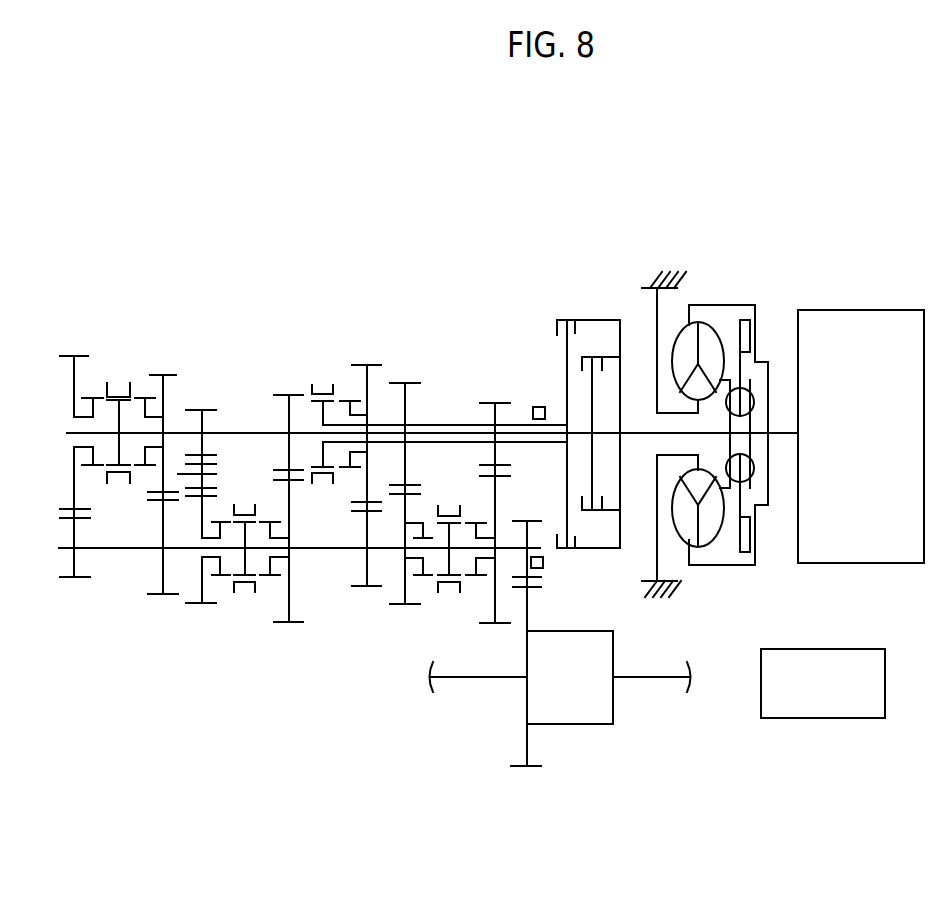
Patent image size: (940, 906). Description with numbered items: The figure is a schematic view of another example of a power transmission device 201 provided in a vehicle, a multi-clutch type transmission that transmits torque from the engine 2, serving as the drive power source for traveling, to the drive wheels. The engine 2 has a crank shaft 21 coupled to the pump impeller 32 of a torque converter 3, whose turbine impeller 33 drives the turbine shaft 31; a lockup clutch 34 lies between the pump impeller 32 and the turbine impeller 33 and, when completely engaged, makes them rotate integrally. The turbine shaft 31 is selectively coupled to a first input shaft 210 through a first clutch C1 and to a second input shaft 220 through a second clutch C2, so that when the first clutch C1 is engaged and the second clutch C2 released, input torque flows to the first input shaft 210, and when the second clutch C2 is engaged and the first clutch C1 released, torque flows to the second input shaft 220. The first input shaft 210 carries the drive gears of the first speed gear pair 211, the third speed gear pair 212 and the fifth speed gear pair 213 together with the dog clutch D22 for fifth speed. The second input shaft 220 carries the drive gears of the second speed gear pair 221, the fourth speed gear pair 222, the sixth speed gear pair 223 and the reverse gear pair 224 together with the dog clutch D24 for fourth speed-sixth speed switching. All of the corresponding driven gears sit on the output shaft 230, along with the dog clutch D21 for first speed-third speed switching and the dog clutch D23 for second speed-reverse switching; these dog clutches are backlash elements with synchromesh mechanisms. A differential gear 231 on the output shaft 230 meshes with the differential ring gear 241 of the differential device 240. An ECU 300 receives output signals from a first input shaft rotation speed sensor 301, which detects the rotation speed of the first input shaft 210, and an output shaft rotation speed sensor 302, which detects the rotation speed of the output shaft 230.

The engine 2 is at (858, 310).
The torque converter 3 is at (720, 434).
The crank shaft 21 is at (783, 432).
The turbine shaft 31 is at (636, 432).
The pump impeller 32 is at (678, 338).
The turbine impeller 33 is at (720, 333).
The lockup clutch 34 is at (750, 338).
The power transmission device 201 is at (591, 373).
The first input shaft 210 is at (445, 425).
The first speed gear pair 211 is at (490, 400).
The third speed gear pair 212 is at (401, 380).
The fifth speed gear pair 213 is at (365, 362).
The second input shaft 220 is at (242, 433).
The second speed gear pair 221 is at (289, 393).
The fourth speed gear pair 222 is at (160, 370).
The sixth speed gear pair 223 is at (81, 352).
The reverse gear pair 224 is at (204, 408).
The output shaft 230 is at (322, 553).
The differential gear 231 is at (529, 519).
The differential device 240 is at (568, 726).
The differential ring gear 241 is at (541, 592).
The ECU 300 is at (855, 648).
The first input shaft rotation speed sensor 301 is at (538, 407).
The output shaft rotation speed sensor 302 is at (548, 563).
The first clutch C1 is at (585, 417).
The second clutch C2 is at (598, 417).
The dog clutch for first speed-third speed switching D21 is at (458, 533).
The dog clutch for fifth speed D22 is at (322, 417).
The dog clutch for second speed-reverse switching D23 is at (245, 533).
The dog clutch for fourth speed-sixth speed switching D24 is at (120, 417).